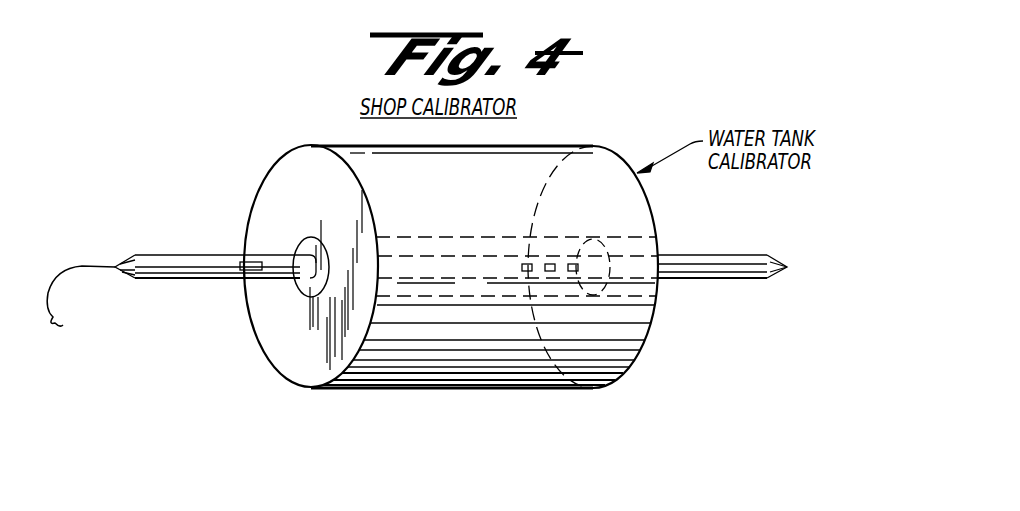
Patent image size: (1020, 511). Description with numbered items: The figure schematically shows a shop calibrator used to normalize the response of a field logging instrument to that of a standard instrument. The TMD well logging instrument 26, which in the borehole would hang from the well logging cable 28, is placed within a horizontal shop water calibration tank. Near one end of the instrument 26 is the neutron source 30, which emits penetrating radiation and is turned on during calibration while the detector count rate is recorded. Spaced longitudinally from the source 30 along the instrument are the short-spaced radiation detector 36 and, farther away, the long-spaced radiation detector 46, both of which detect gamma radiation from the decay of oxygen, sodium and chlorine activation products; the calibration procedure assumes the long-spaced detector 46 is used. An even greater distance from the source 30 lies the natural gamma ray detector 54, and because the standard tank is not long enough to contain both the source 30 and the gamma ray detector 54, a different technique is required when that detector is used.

The TMD well logging instrument 26 is at (773, 281).
The well logging cable 28 is at (103, 265).
The source 30 is at (600, 296).
The first short-spaced radiation detector 36 is at (577, 272).
The second longitudinally spaced radiation detector 46 is at (527, 272).
The third longitudinally spaced detector 54 is at (250, 270).